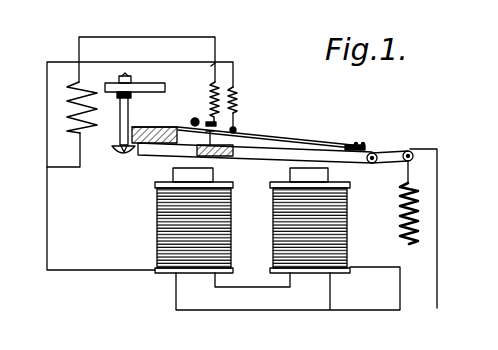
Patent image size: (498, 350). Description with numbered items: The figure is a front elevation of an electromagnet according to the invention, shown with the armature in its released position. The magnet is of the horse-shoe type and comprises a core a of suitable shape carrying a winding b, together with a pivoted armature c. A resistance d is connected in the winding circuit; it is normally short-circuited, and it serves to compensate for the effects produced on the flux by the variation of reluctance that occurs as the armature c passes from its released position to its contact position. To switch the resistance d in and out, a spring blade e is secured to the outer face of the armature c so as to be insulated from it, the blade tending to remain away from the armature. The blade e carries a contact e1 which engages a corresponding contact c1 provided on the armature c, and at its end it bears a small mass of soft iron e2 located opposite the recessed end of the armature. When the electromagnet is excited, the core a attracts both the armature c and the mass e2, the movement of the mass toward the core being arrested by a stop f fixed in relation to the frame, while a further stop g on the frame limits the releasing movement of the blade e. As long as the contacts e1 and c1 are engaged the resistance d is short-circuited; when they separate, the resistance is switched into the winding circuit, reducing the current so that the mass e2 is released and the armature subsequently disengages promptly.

The core a is at (193, 285).
The winding b is at (288, 230).
The armature c is at (314, 160).
The contact c1 is at (180, 148).
The resistance d is at (67, 95).
The spring blade e is at (288, 142).
The contact e1 is at (236, 128).
The soft iron mass e2 is at (170, 127).
The stop f is at (125, 123).
The stop g is at (195, 118).